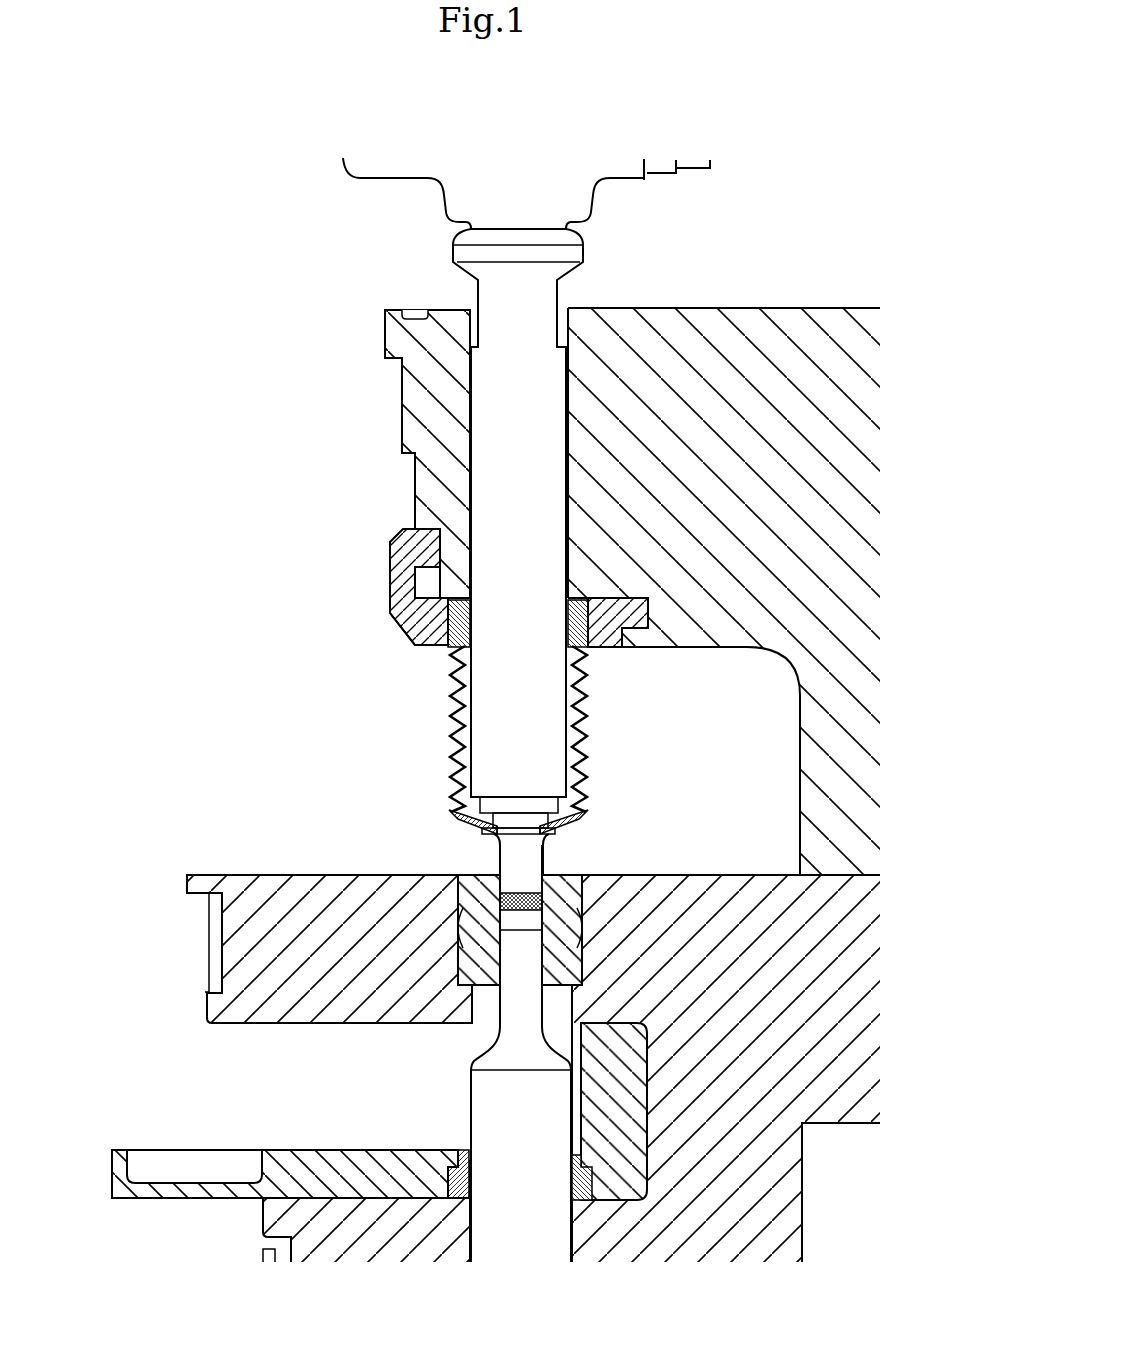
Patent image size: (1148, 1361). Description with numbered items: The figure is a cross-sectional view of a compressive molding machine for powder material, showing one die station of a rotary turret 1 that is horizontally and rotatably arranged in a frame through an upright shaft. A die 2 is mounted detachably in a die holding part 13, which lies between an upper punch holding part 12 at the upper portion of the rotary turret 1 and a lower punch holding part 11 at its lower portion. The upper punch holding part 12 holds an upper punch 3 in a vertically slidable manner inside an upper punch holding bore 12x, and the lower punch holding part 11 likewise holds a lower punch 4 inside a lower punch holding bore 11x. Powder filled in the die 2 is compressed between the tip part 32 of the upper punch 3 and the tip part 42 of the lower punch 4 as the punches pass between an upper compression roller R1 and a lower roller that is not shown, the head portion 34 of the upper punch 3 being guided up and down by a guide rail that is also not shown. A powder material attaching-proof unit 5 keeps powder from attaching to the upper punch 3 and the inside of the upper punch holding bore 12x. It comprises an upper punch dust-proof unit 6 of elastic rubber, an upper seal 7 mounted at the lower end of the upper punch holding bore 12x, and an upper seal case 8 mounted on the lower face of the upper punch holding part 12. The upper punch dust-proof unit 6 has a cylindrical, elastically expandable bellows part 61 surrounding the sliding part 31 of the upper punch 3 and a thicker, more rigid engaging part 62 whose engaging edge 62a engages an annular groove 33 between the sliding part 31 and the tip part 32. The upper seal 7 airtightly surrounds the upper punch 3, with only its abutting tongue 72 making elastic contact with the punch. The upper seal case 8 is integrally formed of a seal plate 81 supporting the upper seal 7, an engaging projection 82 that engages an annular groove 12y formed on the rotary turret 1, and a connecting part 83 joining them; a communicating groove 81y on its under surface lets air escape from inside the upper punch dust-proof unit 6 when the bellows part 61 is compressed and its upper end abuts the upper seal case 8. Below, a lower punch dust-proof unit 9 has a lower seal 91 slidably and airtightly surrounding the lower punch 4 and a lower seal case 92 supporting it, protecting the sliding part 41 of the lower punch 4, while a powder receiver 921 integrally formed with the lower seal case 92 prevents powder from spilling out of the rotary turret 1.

The rotary turret 1 is at (203, 855).
The die 2 is at (603, 878).
The upper punch 3 is at (447, 263).
The lower punch 4 is at (465, 1058).
The powder material attaching-proof unit 5 is at (372, 762).
The upper punch dust-proof unit 6 is at (440, 802).
The upper seal 7 is at (602, 619).
The upper seal case 8 is at (352, 566).
The lower punch dust-proof unit 9 is at (338, 1113).
The lower punch holding part 11 is at (272, 1212).
The lower punch holding bore 11x is at (565, 1227).
The upper punch holding part 12 is at (402, 432).
The upper punch holding bore 12x is at (480, 392).
The annular groove 12y is at (410, 524).
The die holding part 13 is at (232, 955).
The sliding part 31 is at (540, 697).
The tip part 32 is at (527, 857).
The annular groove 33 is at (542, 822).
The head portion 34 is at (575, 252).
The sliding part 41 is at (463, 1200).
The tip part 42 is at (457, 963).
The bellows part 61 is at (585, 743).
The engaging part 62 is at (462, 821).
The engaging edge 62a is at (493, 832).
The abutting tongue 72 is at (453, 650).
The seal plate 81 is at (407, 632).
The communicating groove 81y is at (433, 646).
The engaging projection 82 is at (410, 542).
The connecting part 83 is at (412, 580).
The lower seal 91 is at (460, 1167).
The lower seal case 92 is at (340, 1170).
The powder receiver 921 is at (187, 1186).
The upper compression roller R1 is at (323, 181).